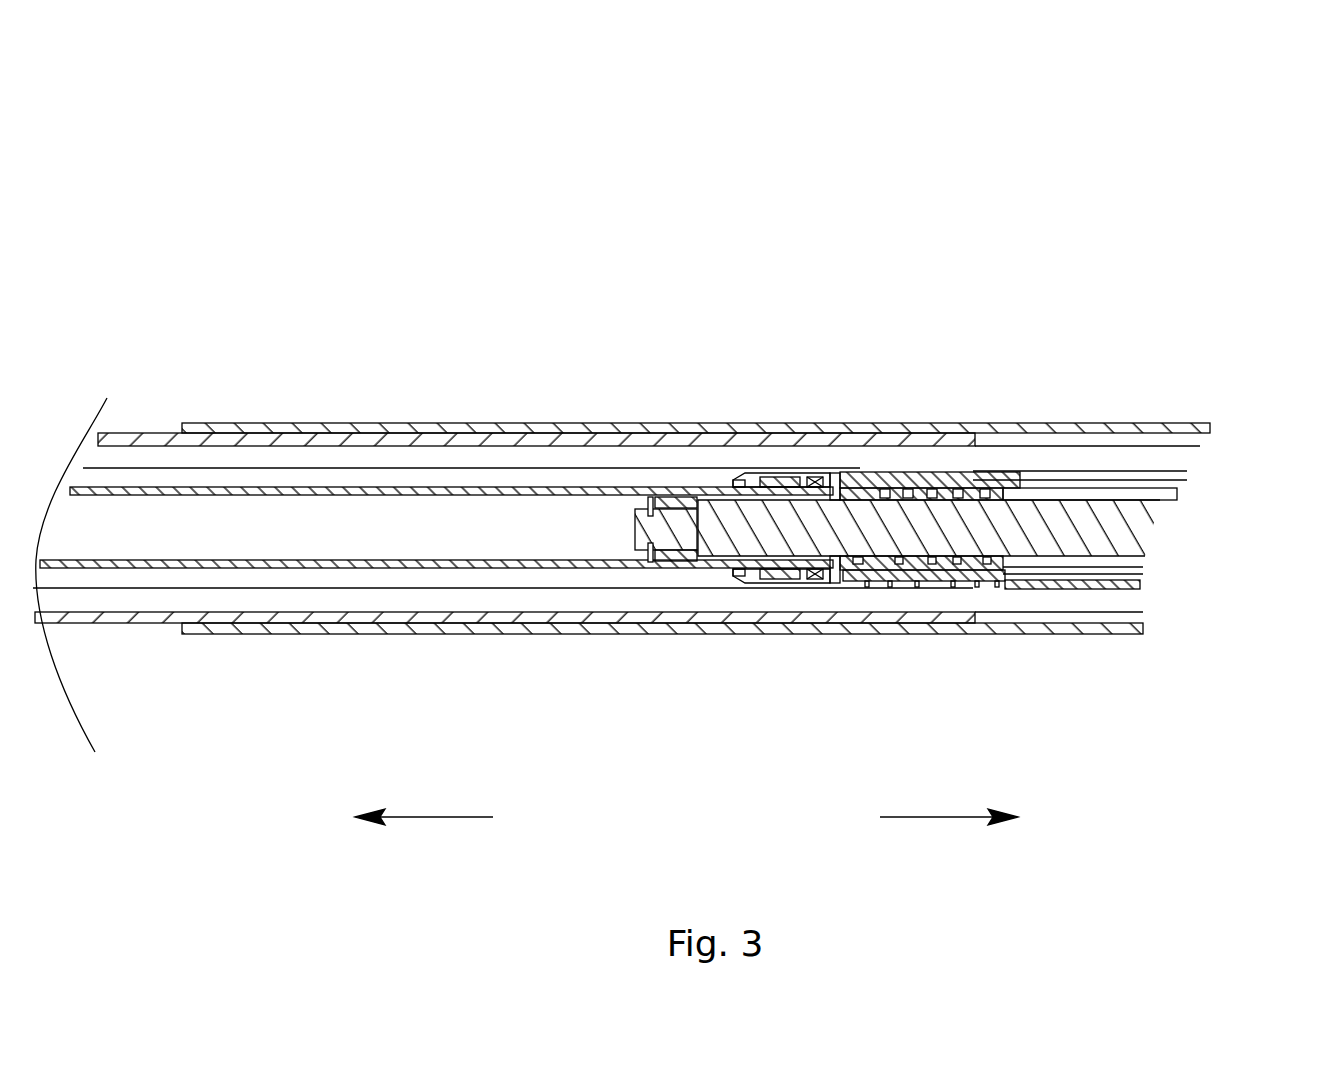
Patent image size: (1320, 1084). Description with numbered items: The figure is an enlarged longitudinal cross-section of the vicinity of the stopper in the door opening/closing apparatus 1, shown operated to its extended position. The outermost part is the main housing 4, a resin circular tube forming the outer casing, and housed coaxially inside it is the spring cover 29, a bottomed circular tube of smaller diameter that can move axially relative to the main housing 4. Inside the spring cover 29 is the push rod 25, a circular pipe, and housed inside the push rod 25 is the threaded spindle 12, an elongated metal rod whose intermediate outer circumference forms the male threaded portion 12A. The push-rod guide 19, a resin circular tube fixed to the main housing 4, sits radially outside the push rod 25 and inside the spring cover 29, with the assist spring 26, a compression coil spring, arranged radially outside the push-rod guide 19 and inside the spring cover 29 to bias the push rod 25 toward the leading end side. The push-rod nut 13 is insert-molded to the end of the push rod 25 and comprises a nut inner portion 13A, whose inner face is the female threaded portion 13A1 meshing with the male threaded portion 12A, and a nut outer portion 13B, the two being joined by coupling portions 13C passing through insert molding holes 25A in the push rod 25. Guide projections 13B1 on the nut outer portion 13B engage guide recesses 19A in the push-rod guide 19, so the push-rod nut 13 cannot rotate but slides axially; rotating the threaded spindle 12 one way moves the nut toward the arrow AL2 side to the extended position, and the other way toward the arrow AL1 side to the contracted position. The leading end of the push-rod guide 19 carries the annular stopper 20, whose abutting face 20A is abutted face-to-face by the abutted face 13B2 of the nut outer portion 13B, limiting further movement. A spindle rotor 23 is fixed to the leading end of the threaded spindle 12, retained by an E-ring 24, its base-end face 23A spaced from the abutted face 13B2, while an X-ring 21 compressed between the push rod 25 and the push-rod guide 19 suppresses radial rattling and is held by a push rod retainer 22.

The door opening/closing apparatus 1 is at (615, 272).
The main housing 4 is at (1050, 425).
The threaded spindle 12 is at (1133, 538).
The male threaded portion 12A is at (1163, 498).
The push-rod nut 13 is at (887, 480).
The nut inner portion 13A is at (1012, 579).
The female threaded portion 13A1 is at (953, 483).
The nut outer portion 13B is at (1003, 558).
The guide projections 13B1 is at (990, 484).
The abutted face 13B2 is at (828, 474).
The coupling portions 13C is at (858, 557).
The push-rod guide 19 is at (1000, 478).
The guide recesses 19A is at (910, 480).
The stopper 20 is at (838, 479).
The abutting face 20A is at (853, 481).
The X-ring 21 is at (798, 478).
The push rod retainer 22 is at (742, 483).
The spindle rotor 23 is at (665, 556).
The base-end face 23A is at (698, 556).
The E-ring 24 is at (647, 554).
The push rod 25 is at (508, 488).
The insert molding holes 25A is at (917, 587).
The assist spring 26 is at (582, 466).
The spring cover 29 is at (132, 433).
The arrow AL1 is at (955, 817).
The arrow AL2 is at (437, 817).